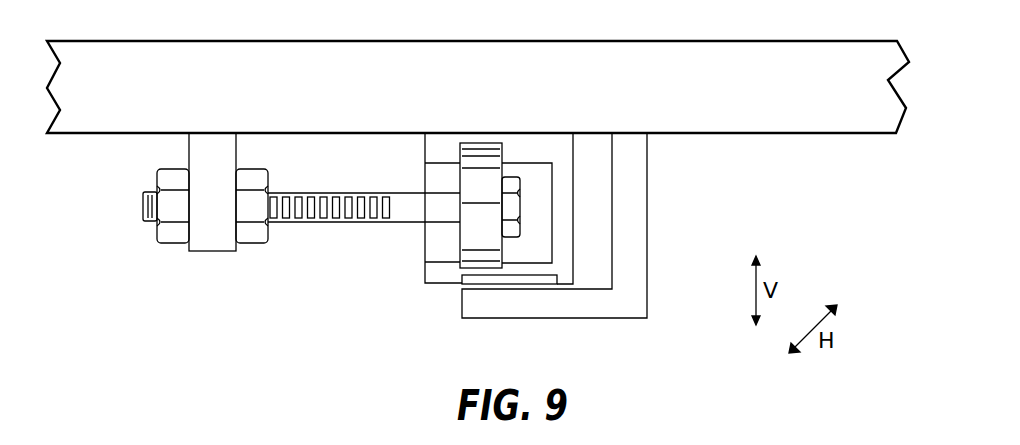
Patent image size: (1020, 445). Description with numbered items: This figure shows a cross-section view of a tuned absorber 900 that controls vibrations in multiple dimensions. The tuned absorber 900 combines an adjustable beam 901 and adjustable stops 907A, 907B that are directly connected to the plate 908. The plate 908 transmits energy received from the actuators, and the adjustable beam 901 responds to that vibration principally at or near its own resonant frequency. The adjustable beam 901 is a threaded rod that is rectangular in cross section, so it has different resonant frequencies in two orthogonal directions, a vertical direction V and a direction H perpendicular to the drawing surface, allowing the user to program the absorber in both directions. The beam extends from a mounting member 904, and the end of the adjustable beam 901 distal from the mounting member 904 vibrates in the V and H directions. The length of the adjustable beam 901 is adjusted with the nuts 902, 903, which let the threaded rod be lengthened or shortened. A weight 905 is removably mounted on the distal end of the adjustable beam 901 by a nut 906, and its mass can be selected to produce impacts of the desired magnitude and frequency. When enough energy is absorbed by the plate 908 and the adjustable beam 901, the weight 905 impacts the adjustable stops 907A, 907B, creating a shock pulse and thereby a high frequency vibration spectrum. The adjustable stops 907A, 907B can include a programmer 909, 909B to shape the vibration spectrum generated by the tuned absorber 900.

The tuned absorber 900 is at (486, 173).
The adjustable beam 901 is at (331, 222).
The nut 902 is at (267, 170).
The nut 903 is at (157, 173).
The mounting member 904 is at (189, 140).
The weight 905 is at (460, 243).
The nut 906 is at (512, 212).
The adjustable stop 907A is at (648, 197).
The adjustable stop 907B is at (443, 147).
The plate 908 is at (783, 133).
The programmer 909 is at (463, 284).
The programmer 909B is at (532, 173).